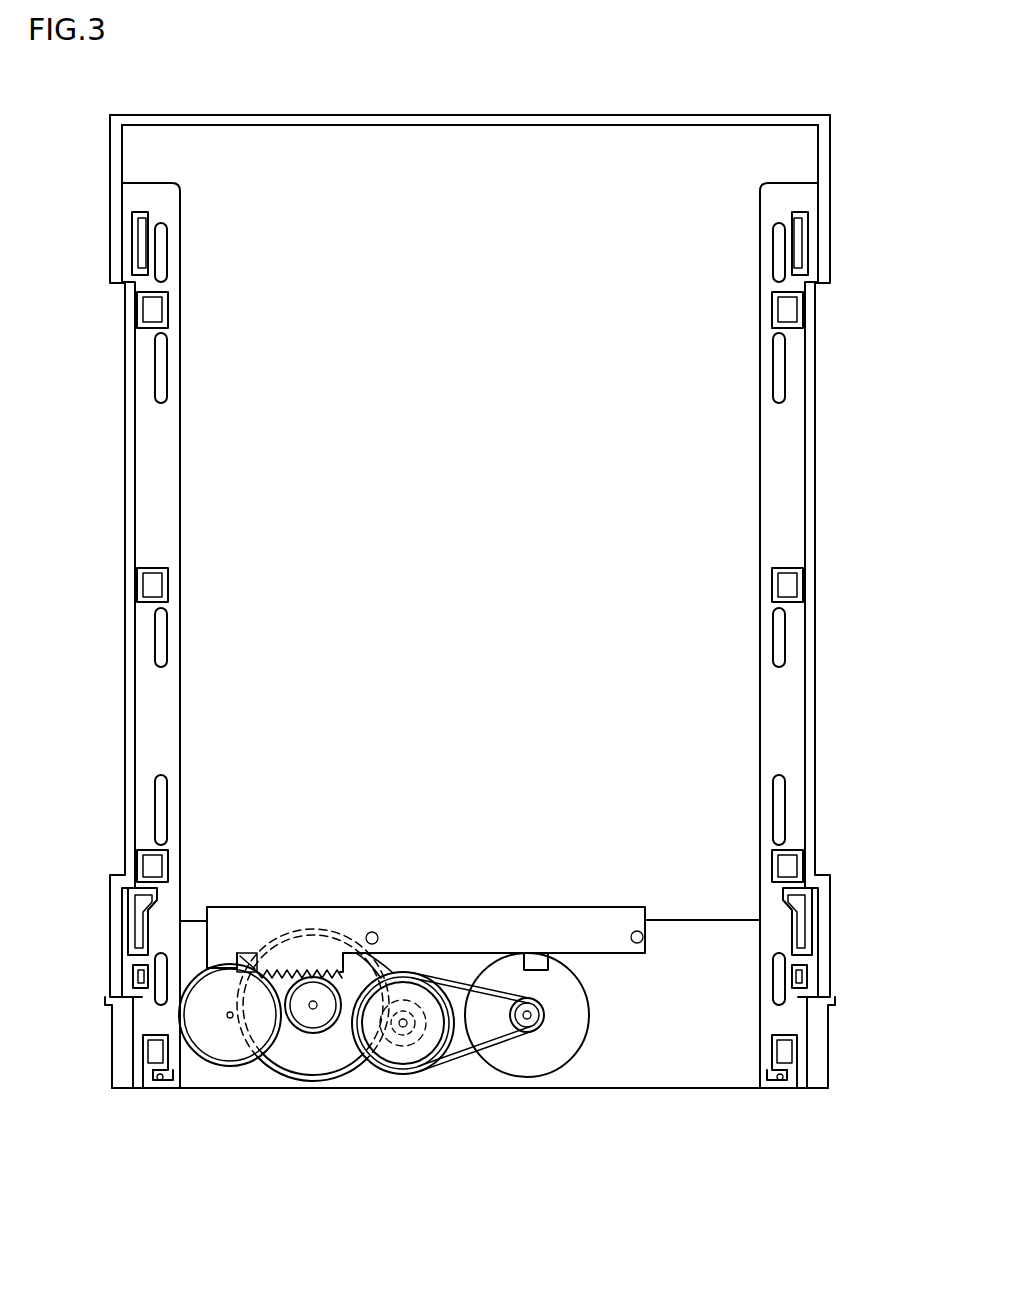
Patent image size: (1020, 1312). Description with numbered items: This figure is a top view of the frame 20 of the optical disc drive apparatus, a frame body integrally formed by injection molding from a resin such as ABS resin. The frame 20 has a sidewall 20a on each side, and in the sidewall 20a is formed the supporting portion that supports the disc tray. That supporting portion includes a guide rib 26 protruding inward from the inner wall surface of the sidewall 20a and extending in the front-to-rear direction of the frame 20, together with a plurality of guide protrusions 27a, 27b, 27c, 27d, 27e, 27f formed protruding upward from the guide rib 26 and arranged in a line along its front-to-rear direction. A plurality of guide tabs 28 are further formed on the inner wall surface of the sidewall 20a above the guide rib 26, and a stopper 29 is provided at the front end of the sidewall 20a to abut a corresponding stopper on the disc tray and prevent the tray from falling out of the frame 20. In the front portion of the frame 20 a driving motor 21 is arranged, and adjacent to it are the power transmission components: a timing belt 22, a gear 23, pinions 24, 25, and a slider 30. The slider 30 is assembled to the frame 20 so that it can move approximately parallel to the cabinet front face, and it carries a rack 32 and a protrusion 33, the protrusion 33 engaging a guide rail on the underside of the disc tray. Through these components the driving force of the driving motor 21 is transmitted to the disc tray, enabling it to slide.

The frame 20 is at (836, 436).
The sidewall 20a is at (128, 540).
The driving motor 21 is at (527, 1057).
The timing belt 22 is at (462, 1060).
The gear 23 is at (401, 1050).
The pinion 24 is at (313, 1052).
The pinion 25 is at (228, 1050).
The guide rib 26 is at (157, 724).
The guide protrusion 27a is at (160, 1082).
The guide protrusion 27b is at (155, 977).
The guide protrusion 27c is at (158, 815).
The guide protrusion 27d is at (158, 640).
The guide protrusion 27e is at (160, 371).
The guide protrusion 27f is at (158, 250).
The guide tab 28 is at (152, 311).
The stopper 29 is at (140, 922).
The slider 30 is at (238, 935).
The rack 32 is at (288, 967).
The protrusion 33 is at (371, 932).